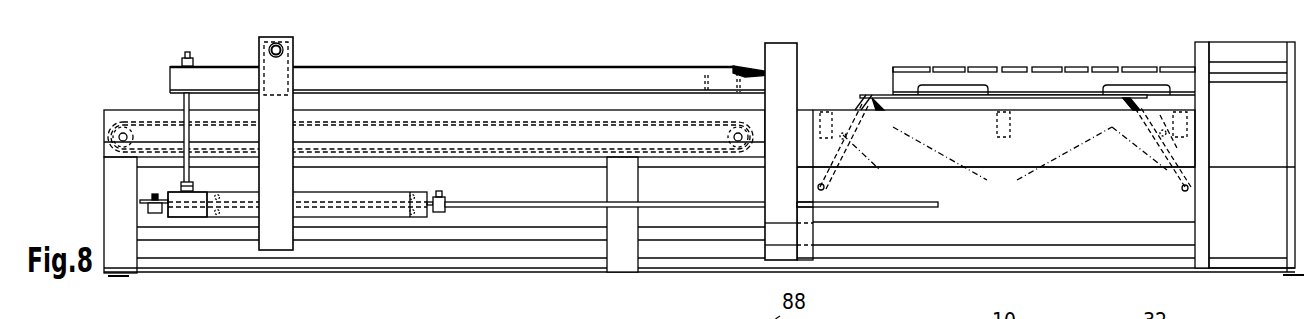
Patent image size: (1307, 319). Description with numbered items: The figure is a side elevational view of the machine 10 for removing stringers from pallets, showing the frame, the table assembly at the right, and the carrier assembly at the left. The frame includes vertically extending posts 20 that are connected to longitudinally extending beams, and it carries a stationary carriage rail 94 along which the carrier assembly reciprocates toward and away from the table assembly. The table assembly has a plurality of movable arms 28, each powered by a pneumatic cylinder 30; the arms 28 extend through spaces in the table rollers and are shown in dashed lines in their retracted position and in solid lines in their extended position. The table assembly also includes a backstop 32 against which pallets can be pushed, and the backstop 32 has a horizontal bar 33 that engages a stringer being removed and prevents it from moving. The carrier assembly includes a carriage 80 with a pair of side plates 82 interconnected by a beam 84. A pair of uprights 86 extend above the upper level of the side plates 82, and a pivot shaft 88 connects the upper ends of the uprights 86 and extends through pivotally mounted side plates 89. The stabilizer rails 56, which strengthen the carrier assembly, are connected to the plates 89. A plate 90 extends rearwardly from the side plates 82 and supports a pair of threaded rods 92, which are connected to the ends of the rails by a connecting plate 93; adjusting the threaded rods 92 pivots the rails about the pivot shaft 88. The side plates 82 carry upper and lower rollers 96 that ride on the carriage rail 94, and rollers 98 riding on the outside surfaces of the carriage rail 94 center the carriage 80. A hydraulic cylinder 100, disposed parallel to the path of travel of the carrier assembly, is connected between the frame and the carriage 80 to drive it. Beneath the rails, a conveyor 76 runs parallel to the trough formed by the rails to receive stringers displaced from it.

The machine for removing stringers from pallets 10 is at (838, 54).
The vertically extending posts 20 is at (118, 203).
The movable arms 28 is at (1080, 147).
The pneumatic cylinder 30 is at (1172, 177).
The backstop 32 is at (1202, 55).
The horizontal bar 33 is at (1258, 80).
The stabilizer rails 56 is at (488, 82).
The conveyor 76 is at (143, 121).
The carriage 80 is at (240, 240).
The side plates 82 is at (368, 212).
The beam 84 is at (450, 197).
The uprights 86 is at (280, 240).
The pivot shaft 88 is at (283, 49).
The pivotally mounted side plates 89 is at (275, 80).
The plate 90 is at (190, 212).
The threaded rods 92 is at (184, 102).
The connecting plate 93 is at (200, 66).
The stationary carriage rail 94 is at (662, 202).
The upper and lower rollers 96 is at (410, 196).
The rollers 98 is at (446, 210).
The hydraulic cylinder 100 is at (928, 230).